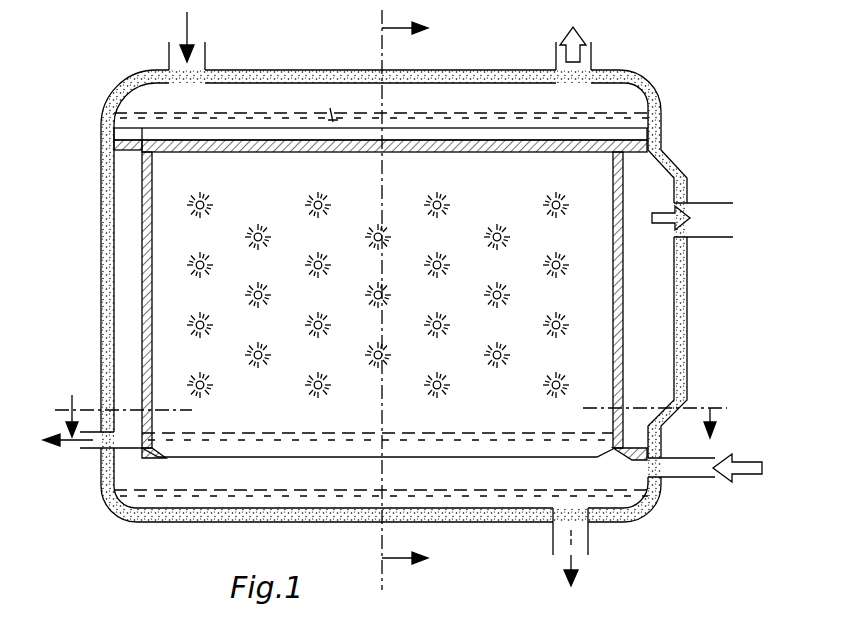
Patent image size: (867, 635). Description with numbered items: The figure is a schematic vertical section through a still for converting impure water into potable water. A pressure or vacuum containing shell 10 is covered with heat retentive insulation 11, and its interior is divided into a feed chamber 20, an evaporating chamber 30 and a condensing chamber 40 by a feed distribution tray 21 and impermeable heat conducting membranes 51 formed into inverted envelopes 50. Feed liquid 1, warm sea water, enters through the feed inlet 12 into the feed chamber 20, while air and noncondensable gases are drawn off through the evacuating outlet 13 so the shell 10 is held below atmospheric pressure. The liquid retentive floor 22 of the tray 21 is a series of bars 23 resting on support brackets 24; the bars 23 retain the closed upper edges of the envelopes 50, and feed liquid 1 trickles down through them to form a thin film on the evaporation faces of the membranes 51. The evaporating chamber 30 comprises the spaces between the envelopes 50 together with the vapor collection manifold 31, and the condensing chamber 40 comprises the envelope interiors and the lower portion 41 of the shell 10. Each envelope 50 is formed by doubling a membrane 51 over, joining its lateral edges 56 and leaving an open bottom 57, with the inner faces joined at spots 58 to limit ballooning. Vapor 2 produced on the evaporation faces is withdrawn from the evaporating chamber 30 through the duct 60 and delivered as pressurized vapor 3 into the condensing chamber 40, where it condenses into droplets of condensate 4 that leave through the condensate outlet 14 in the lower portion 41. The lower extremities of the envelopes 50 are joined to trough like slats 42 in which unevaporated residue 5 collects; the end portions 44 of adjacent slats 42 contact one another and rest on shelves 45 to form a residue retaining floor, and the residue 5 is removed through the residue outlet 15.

The feed liquid 1 is at (188, 30).
The vapor 2 is at (652, 220).
The pressurized vapor 3 is at (746, 468).
The condensate 4 is at (518, 477).
The unevaporated residue 5 is at (482, 411).
The shell 10 is at (476, 72).
The heat retentive insulation 11 is at (278, 75).
The feed inlet 12 is at (205, 46).
The evacuating outlet 13 is at (591, 52).
The condensate outlet 14 is at (589, 542).
The residue outlet 15 is at (82, 452).
The feed chamber 20 is at (418, 86).
The feed distribution tray 21 is at (645, 131).
The liquid retentive floor 22 is at (590, 128).
The bars 23 is at (545, 120).
The support brackets 24 is at (128, 142).
The evaporating chamber 30 is at (660, 155).
The vapor collection manifold 31 is at (676, 196).
The condensing chamber 40 is at (430, 478).
The lower portion 41 is at (648, 496).
The trough like slats 42 is at (147, 457).
The end portions 44 is at (143, 432).
The shelves 45 is at (138, 450).
The envelopes 50 is at (380, 233).
The membrane 51 is at (623, 333).
The lateral edges 56 is at (146, 312).
The open bottom 57 is at (250, 458).
The joined spots 58 is at (376, 235).
The duct 60 is at (698, 238).